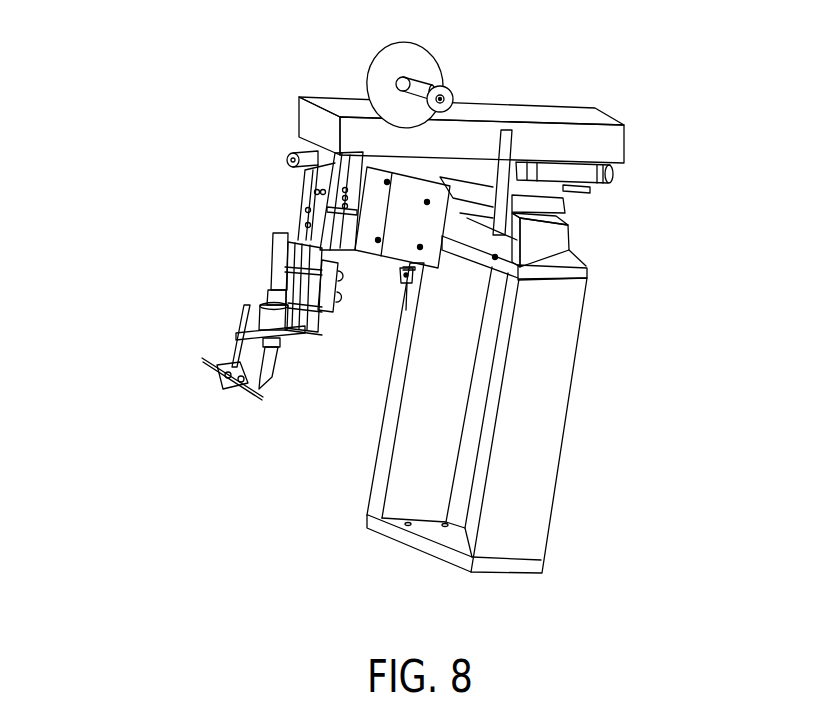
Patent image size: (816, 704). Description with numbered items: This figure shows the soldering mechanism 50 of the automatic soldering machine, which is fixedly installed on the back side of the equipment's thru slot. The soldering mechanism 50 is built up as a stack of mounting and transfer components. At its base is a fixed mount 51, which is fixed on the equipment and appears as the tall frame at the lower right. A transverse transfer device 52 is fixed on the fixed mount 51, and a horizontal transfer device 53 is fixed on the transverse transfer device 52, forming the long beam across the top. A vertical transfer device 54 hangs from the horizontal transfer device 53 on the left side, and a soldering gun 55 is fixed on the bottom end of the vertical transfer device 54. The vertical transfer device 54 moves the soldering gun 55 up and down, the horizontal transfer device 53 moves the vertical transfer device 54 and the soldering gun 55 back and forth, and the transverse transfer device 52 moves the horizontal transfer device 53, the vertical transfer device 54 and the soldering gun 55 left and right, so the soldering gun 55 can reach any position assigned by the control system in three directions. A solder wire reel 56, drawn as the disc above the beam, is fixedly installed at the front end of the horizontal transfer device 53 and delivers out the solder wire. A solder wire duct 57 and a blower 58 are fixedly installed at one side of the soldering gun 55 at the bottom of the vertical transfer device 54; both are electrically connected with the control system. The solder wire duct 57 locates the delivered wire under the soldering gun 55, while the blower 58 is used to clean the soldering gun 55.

The soldering mechanism 50 is at (72, 85).
The fixed mount 51 is at (507, 515).
The transverse transfer device 52 is at (530, 237).
The horizontal transfer device 53 is at (497, 157).
The vertical transfer device 54 is at (303, 248).
The soldering gun 55 is at (268, 362).
The solder wire reel 56 is at (388, 95).
The solder wire duct 57 is at (210, 367).
The blower 58 is at (220, 373).